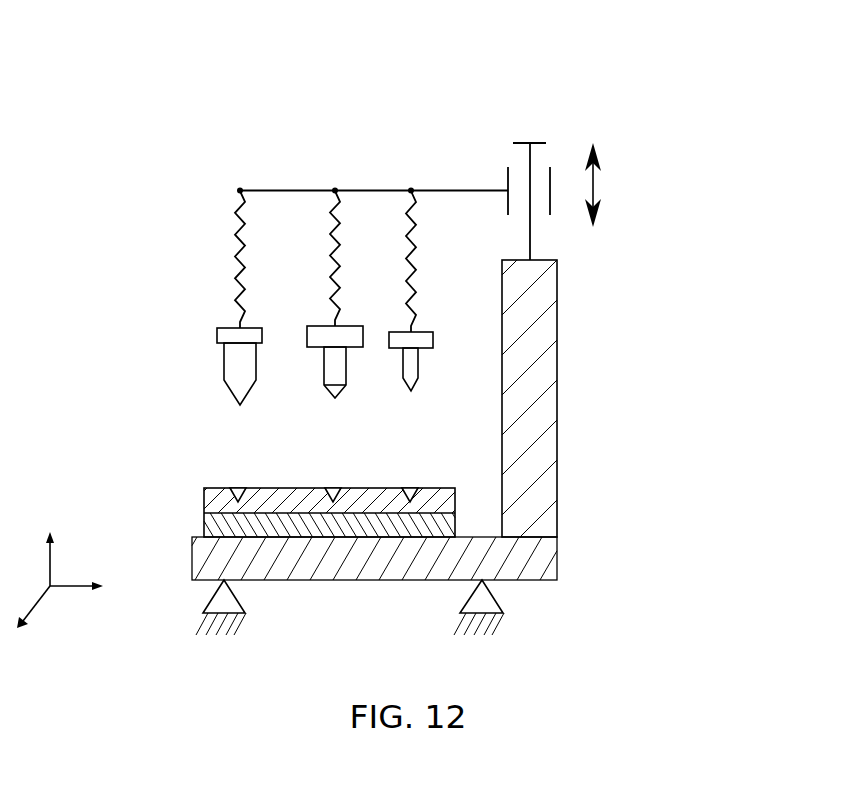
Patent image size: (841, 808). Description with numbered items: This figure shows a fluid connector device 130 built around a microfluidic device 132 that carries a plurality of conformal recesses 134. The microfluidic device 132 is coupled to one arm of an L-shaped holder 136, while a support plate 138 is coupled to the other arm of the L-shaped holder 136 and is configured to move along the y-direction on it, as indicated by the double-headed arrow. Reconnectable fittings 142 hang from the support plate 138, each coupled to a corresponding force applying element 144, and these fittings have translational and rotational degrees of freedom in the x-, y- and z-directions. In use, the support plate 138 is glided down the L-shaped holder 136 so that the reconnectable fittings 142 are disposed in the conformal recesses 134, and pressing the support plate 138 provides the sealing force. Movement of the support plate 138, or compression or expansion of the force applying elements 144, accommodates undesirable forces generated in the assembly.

The fluid connector device 130 is at (592, 76).
The microfluidic device 132 is at (204, 505).
The conformal recesses 134 is at (333, 491).
The L-shaped holder 136 is at (557, 405).
The support plate 138 is at (463, 190).
The reconnectable fittings 142 is at (440, 307).
The force applying elements 144 is at (407, 250).